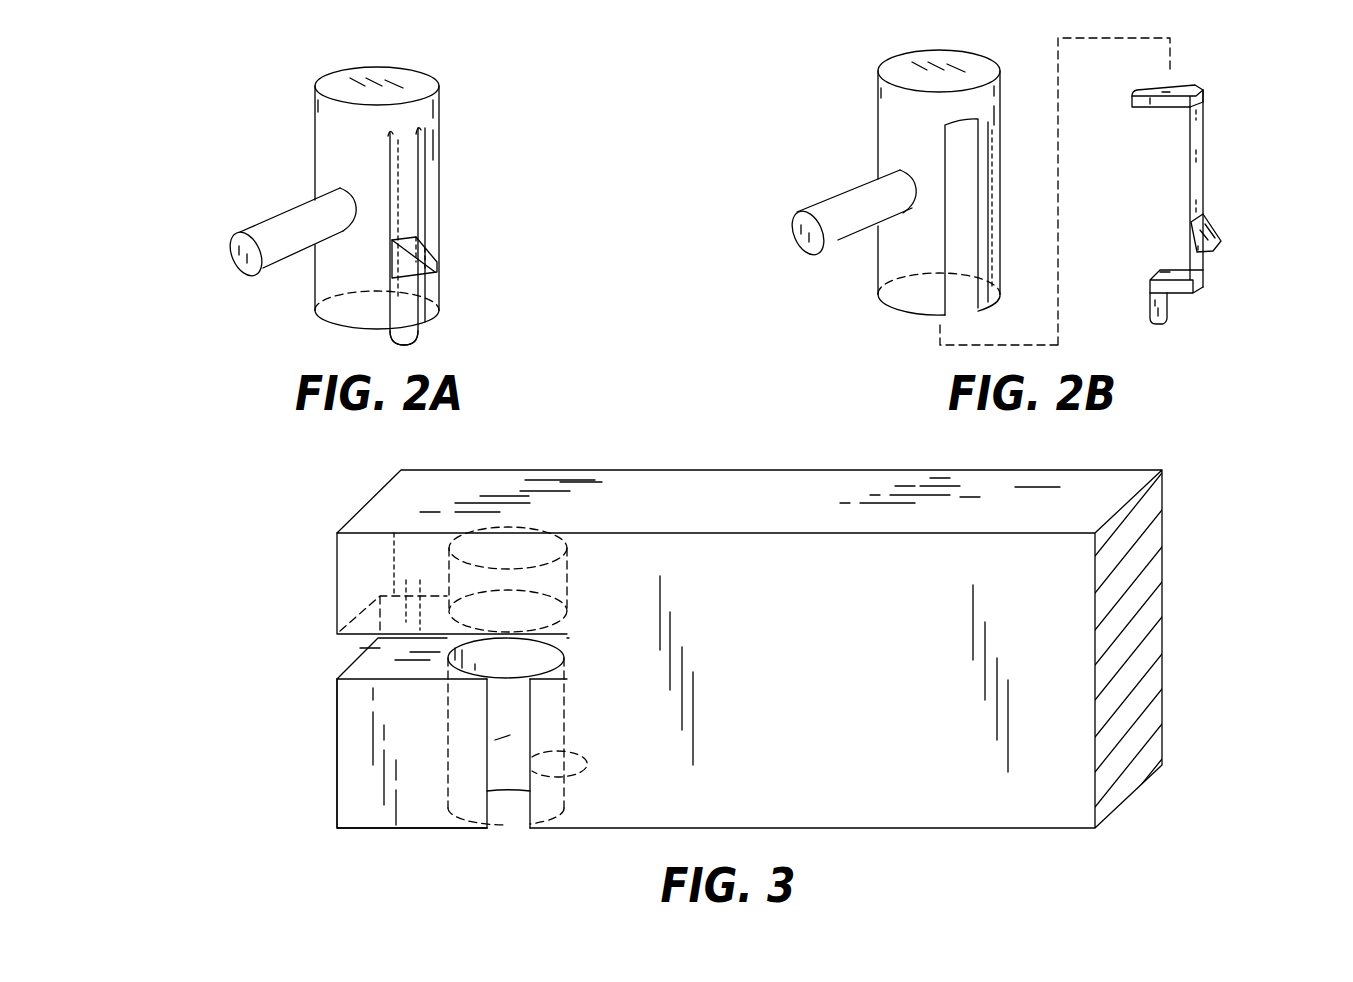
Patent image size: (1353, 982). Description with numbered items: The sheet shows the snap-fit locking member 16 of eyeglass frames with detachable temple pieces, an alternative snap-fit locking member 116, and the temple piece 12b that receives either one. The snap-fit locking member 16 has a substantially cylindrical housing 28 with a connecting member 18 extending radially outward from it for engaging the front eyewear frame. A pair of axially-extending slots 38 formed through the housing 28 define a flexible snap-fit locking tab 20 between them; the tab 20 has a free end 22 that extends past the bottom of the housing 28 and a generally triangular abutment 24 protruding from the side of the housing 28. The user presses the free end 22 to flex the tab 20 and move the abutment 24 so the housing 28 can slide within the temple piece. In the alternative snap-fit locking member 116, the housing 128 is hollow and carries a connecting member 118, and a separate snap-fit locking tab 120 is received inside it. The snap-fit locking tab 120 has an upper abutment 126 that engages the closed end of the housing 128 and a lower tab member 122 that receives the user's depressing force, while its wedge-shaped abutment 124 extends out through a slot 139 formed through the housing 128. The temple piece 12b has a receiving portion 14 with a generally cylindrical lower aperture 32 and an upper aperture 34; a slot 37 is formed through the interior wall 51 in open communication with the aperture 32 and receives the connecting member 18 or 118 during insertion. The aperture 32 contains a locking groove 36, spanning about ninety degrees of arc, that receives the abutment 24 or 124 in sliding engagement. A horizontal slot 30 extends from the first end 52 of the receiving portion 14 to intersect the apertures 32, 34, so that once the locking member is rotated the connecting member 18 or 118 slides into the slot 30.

In FIG. 3, the temple piece 12b is at (767, 656).
In FIG. 3, the receiving portion 14 is at (1113, 473).
In FIG. 2A, the snap-fit locking member 16 is at (393, 204).
In FIG. 2A, the connecting member 18 is at (262, 222).
In FIG. 2A, the snap-fit locking tab 20 is at (405, 195).
In FIG. 2A, the free end 22 is at (404, 335).
In FIG. 2A, the abutment 24 is at (422, 270).
In FIG. 2A, the housing 28 is at (440, 108).
In FIG. 3, the slot 30 is at (338, 652).
In FIG. 3, the lower aperture 32 is at (508, 834).
In FIG. 3, the upper aperture 34 is at (425, 564).
In FIG. 3, the locking groove 36 is at (600, 776).
In FIG. 3, the slot 37 is at (533, 722).
In FIG. 2A, the axially-extending slots 38 is at (388, 150).
In FIG. 3, the interior wall 51 is at (790, 641).
In FIG. 3, the first end 52 is at (337, 747).
In FIG. 2B, the alternative snap-fit locking member 116 is at (860, 182).
In FIG. 2B, the connecting member 118 is at (830, 200).
In FIG. 2B, the snap-fit locking tab 120 is at (1216, 191).
In FIG. 2B, the lower tab member 122 is at (1168, 303).
In FIG. 2B, the abutment 124 is at (1213, 222).
In FIG. 2B, the upper abutment 126 is at (1185, 86).
In FIG. 2B, the housing 128 is at (878, 80).
In FIG. 2B, the slot 139 is at (924, 249).